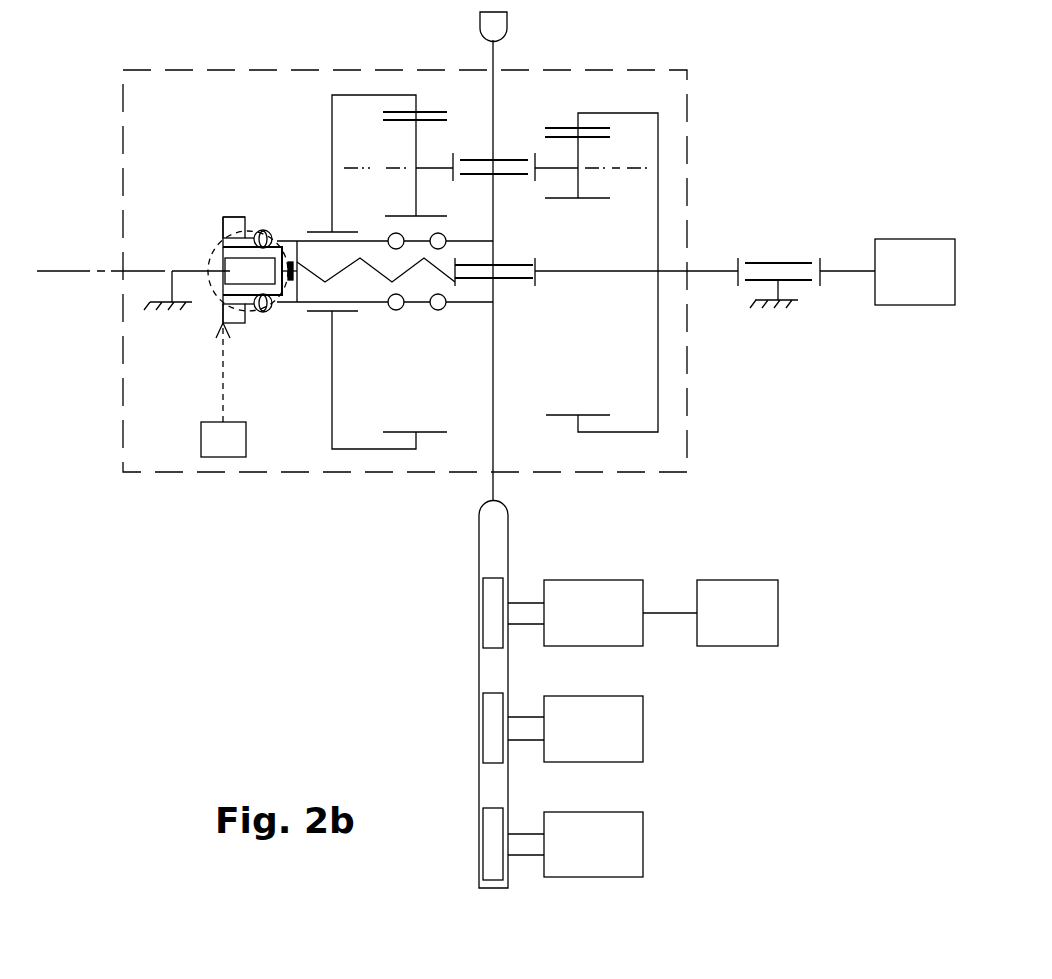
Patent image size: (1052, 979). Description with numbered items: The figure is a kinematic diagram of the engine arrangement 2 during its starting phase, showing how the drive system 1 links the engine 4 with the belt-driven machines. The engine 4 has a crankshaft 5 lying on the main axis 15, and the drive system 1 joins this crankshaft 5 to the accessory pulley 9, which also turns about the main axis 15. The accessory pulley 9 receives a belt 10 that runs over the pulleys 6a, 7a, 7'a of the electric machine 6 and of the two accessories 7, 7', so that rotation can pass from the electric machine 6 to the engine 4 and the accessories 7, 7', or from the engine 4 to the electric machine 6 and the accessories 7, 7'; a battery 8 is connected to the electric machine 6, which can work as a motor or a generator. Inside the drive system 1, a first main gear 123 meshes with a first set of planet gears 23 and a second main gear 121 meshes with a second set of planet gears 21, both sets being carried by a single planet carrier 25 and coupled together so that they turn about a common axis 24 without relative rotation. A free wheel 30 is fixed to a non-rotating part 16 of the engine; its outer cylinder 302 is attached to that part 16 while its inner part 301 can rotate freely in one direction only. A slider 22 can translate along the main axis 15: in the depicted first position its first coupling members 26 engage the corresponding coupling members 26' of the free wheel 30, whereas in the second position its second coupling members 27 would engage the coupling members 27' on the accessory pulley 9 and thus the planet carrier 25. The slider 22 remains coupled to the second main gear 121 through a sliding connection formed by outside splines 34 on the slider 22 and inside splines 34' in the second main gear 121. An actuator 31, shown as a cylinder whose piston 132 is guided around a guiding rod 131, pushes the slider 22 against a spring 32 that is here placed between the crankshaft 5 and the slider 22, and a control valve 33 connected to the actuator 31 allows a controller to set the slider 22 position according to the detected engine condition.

The drive system 1 is at (692, 417).
The engine arrangement 2 is at (748, 367).
The engine 4 is at (925, 283).
The crankshaft 5 is at (848, 271).
The electric machine 6 is at (628, 625).
The pulley 6a is at (489, 605).
The accessory 7 is at (615, 730).
The pulley 7a is at (492, 720).
The accessory 7' is at (615, 851).
The pulley 7'a is at (477, 844).
The battery 8 is at (748, 624).
The accessory pulley 9 is at (496, 104).
The belt 10 is at (498, 667).
The main axis 15 is at (78, 271).
The non-rotating part 16 is at (161, 305).
The second set of planet gears 21 is at (416, 152).
The slider 22 is at (283, 306).
The first set of planet gears 23 is at (578, 181).
The axis 24 is at (378, 168).
The planet carrier 25 is at (496, 203).
The first coupling members 26 is at (412, 302).
The coupling members 26' is at (455, 295).
The second coupling members 27 is at (270, 331).
The coupling members 27' is at (243, 348).
The free wheel 30 is at (238, 229).
The actuator 31 is at (208, 297).
The spring 32 is at (348, 264).
The control valve 33 is at (232, 440).
The outside splines 34 is at (385, 318).
The inside splines 34' is at (339, 298).
The second main gear 121 is at (332, 106).
The first main gear 123 is at (658, 190).
The guiding rod 131 is at (240, 272).
The piston 132 is at (263, 233).
The inner part 301 is at (252, 234).
The outer cylinder 302 is at (222, 217).